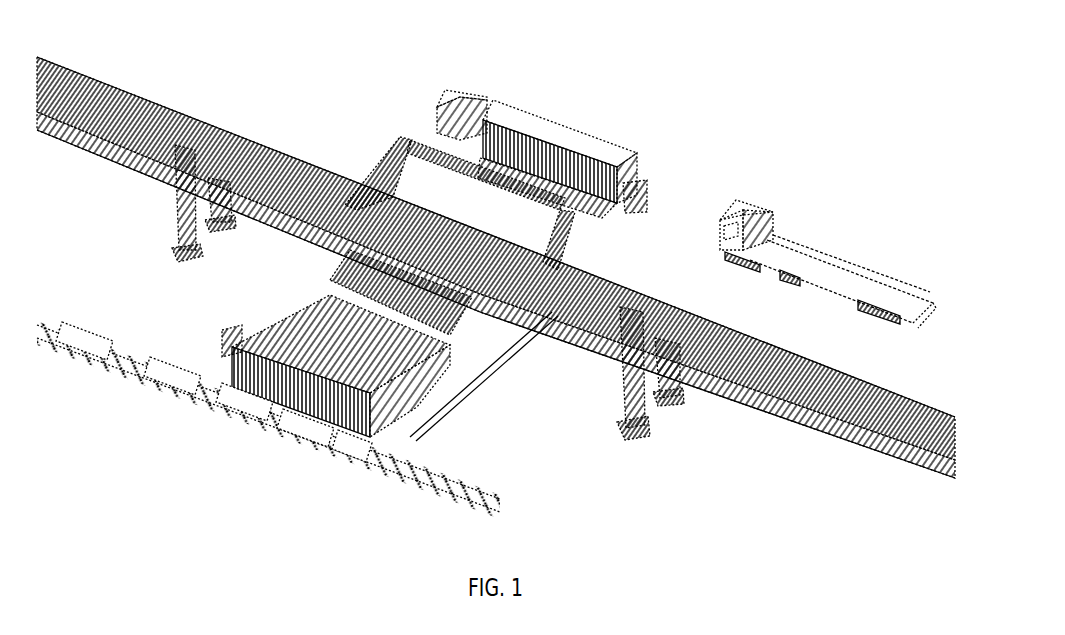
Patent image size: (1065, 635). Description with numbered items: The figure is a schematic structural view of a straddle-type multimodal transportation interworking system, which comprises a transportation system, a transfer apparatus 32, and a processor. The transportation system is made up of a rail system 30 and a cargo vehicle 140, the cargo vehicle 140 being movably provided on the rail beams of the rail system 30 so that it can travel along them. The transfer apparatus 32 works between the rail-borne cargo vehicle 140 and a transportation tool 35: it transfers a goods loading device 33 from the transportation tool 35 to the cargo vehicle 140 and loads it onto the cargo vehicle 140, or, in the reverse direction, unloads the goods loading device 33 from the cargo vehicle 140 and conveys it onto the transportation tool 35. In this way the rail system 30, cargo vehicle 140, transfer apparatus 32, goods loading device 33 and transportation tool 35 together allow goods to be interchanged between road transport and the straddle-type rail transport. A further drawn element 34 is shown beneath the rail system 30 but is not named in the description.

The lower chord of truss beam 140 is at (111, 148).
The truss beam bridge 30 is at (208, 140).
The hopper car 32 is at (316, 325).
The gantry crane 33 is at (567, 125).
The support pier 34 is at (223, 191).
The truck 35 is at (453, 93).